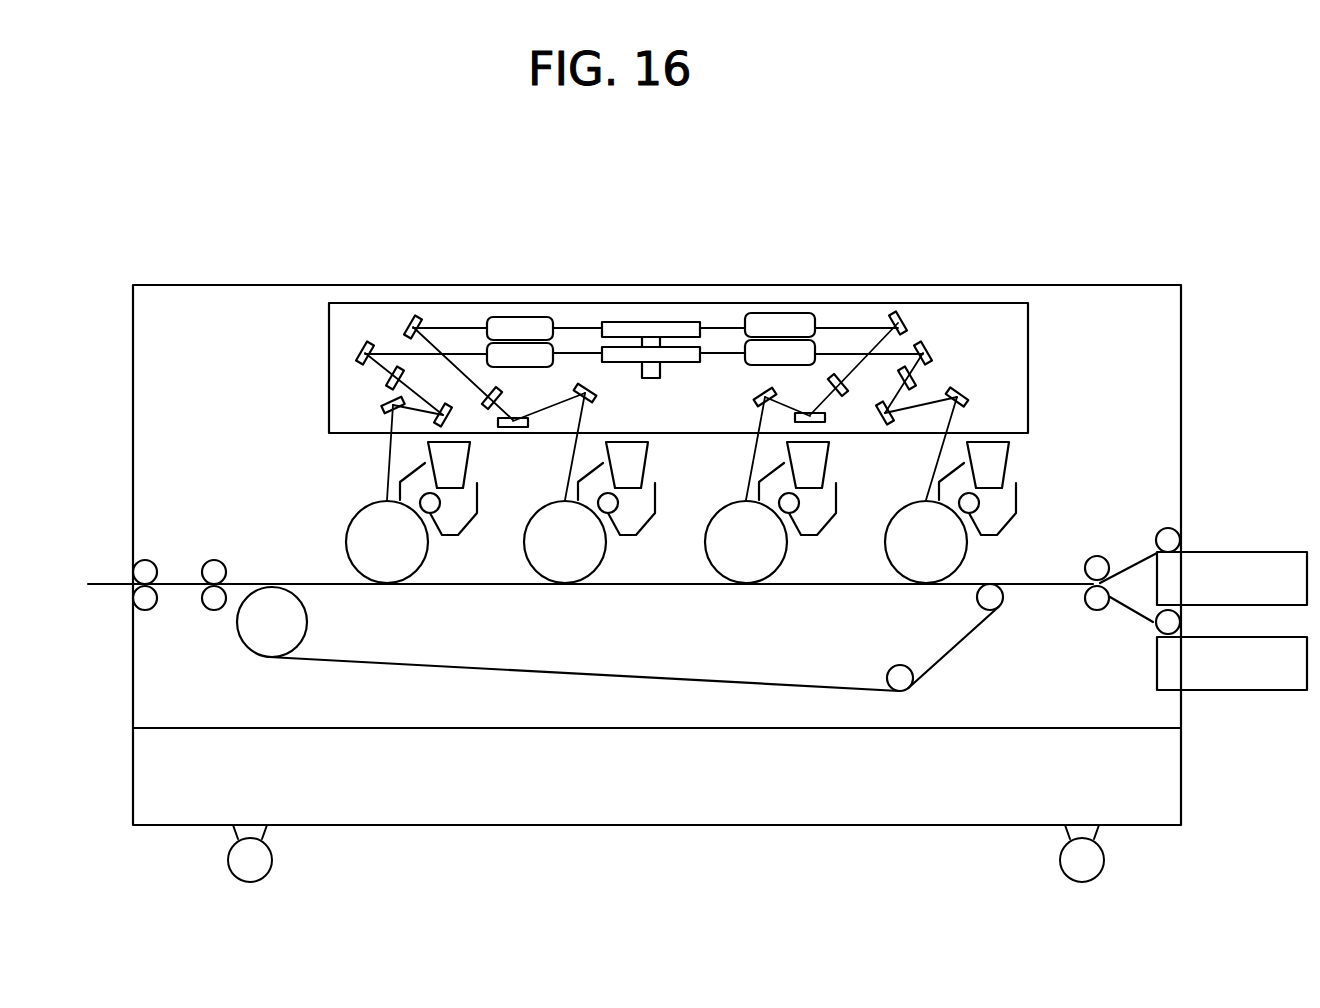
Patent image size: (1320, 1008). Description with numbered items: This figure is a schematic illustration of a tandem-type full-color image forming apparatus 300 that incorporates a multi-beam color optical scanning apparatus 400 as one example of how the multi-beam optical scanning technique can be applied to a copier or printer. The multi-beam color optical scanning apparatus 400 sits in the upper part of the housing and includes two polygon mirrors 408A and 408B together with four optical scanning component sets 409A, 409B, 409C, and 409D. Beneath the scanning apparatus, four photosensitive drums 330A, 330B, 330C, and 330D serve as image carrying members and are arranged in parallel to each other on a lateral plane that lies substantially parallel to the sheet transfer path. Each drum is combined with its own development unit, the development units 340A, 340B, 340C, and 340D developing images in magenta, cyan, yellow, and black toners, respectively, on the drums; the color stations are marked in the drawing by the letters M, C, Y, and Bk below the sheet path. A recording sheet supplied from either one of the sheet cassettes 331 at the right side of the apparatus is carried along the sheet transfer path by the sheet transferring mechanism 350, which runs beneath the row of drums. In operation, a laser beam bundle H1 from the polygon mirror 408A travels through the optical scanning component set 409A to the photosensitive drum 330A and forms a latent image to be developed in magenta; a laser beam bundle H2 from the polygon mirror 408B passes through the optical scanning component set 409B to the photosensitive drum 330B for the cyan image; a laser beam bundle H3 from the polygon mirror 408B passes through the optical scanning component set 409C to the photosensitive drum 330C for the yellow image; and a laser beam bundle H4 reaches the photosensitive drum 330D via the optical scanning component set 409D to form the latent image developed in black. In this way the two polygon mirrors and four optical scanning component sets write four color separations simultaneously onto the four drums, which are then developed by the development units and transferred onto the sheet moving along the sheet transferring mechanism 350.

The tandem-type full-color image forming apparatus 300 is at (992, 188).
The multi-beam color optical scanning apparatus 400 is at (1030, 353).
The polygon mirror 408A is at (668, 363).
The polygon mirror 408B is at (637, 321).
The optical scanning component set 409A is at (815, 350).
The optical scanning component set 409B is at (790, 313).
The optical scanning component set 409C is at (507, 317).
The optical scanning component set 409D is at (487, 350).
The laser beam bundle H1 is at (728, 328).
The laser beam bundle H2 is at (725, 353).
The laser beam bundle H3 is at (597, 353).
The laser beam bundle H4 is at (590, 328).
The photosensitive drum 330A is at (967, 563).
The photosensitive drum 330B is at (787, 563).
The photosensitive drum 330C is at (606, 563).
The photosensitive drum 330D is at (428, 563).
The development unit 340A is at (1007, 466).
The development unit 340B is at (827, 466).
The development unit 340C is at (646, 466).
The development unit 340D is at (468, 466).
The sheet transferring mechanism 350 is at (625, 687).
The sheet cassettes 331 is at (1225, 552).
The black station Bk is at (383, 600).
The yellow station Y is at (563, 600).
The cyan station C is at (743, 600).
The magenta station M is at (921, 600).